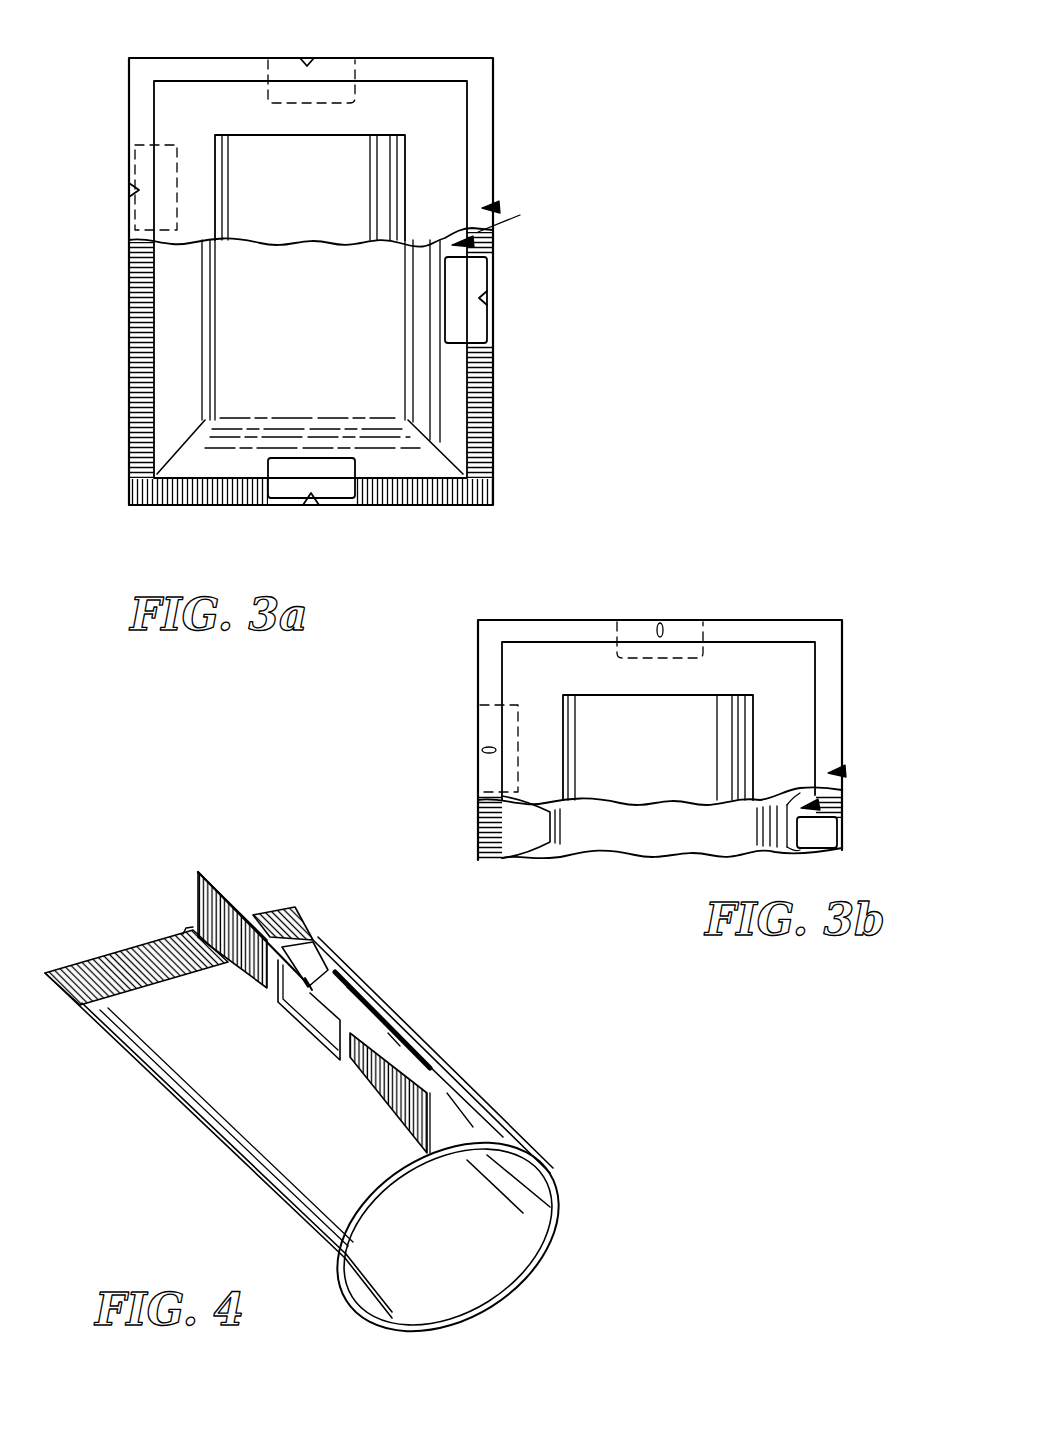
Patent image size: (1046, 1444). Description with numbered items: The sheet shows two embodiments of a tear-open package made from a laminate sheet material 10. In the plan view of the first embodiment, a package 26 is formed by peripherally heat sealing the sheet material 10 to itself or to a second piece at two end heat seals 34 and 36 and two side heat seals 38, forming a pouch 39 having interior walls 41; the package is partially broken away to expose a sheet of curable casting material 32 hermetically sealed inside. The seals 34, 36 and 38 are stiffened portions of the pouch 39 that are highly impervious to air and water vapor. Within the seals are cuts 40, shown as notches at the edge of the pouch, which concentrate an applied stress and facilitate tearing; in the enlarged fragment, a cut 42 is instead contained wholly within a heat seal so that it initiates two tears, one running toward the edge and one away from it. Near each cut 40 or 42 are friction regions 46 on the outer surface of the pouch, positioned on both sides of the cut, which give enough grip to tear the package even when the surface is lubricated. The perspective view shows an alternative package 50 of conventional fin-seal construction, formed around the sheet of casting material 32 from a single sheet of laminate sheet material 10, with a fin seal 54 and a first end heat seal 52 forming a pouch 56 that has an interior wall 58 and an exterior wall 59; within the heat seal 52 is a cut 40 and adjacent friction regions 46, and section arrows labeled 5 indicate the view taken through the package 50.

In FIG. 3a, the laminate sheet material 10 is at (520, 215).
In FIG. 3b, the laminate sheet material 10 is at (815, 804).
In FIG. 4, the laminate sheet material 10 is at (521, 1127).
In FIG. 3a, the package 26 is at (516, 67).
In FIG. 3b, the package 26 is at (816, 582).
In FIG. 3a, the sheet of curable casting material 32 is at (297, 198).
In FIG. 3b, the sheet of curable casting material 32 is at (640, 798).
In FIG. 3a, the end heat seal 34 is at (188, 70).
In FIG. 3b, the end heat seal 34 is at (537, 630).
In FIG. 3a, the end heat seal 36 is at (188, 492).
In FIG. 3a, the side heat seals 38 is at (484, 375).
In FIG. 3a, the pouch 39 is at (118, 327).
In FIG. 3b, the pouch 39 is at (466, 650).
In FIG. 3a, the cut 40 is at (308, 61).
In FIG. 4, the cut 40 is at (182, 933).
In FIG. 3a, the interior walls 41 is at (450, 164).
In FIG. 3b, the interior walls 41 is at (800, 728).
In FIG. 3b, the cut 42 is at (659, 623).
In FIG. 3a, the friction regions 46 is at (330, 56).
In FIG. 3b, the friction regions 46 is at (711, 629).
In FIG. 4, the friction regions 46 is at (295, 1005).
In FIG. 4, the package 50 is at (401, 991).
In FIG. 4, the first end heat seal 52 is at (275, 908).
In FIG. 4, the fin seal 54 is at (204, 880).
In FIG. 4, the pouch 56 is at (520, 1192).
In FIG. 4, the interior wall 58 is at (528, 1245).
In FIG. 4, the exterior wall 59 is at (244, 1135).
In FIG. 4, the section line 5 is at (350, 1143).